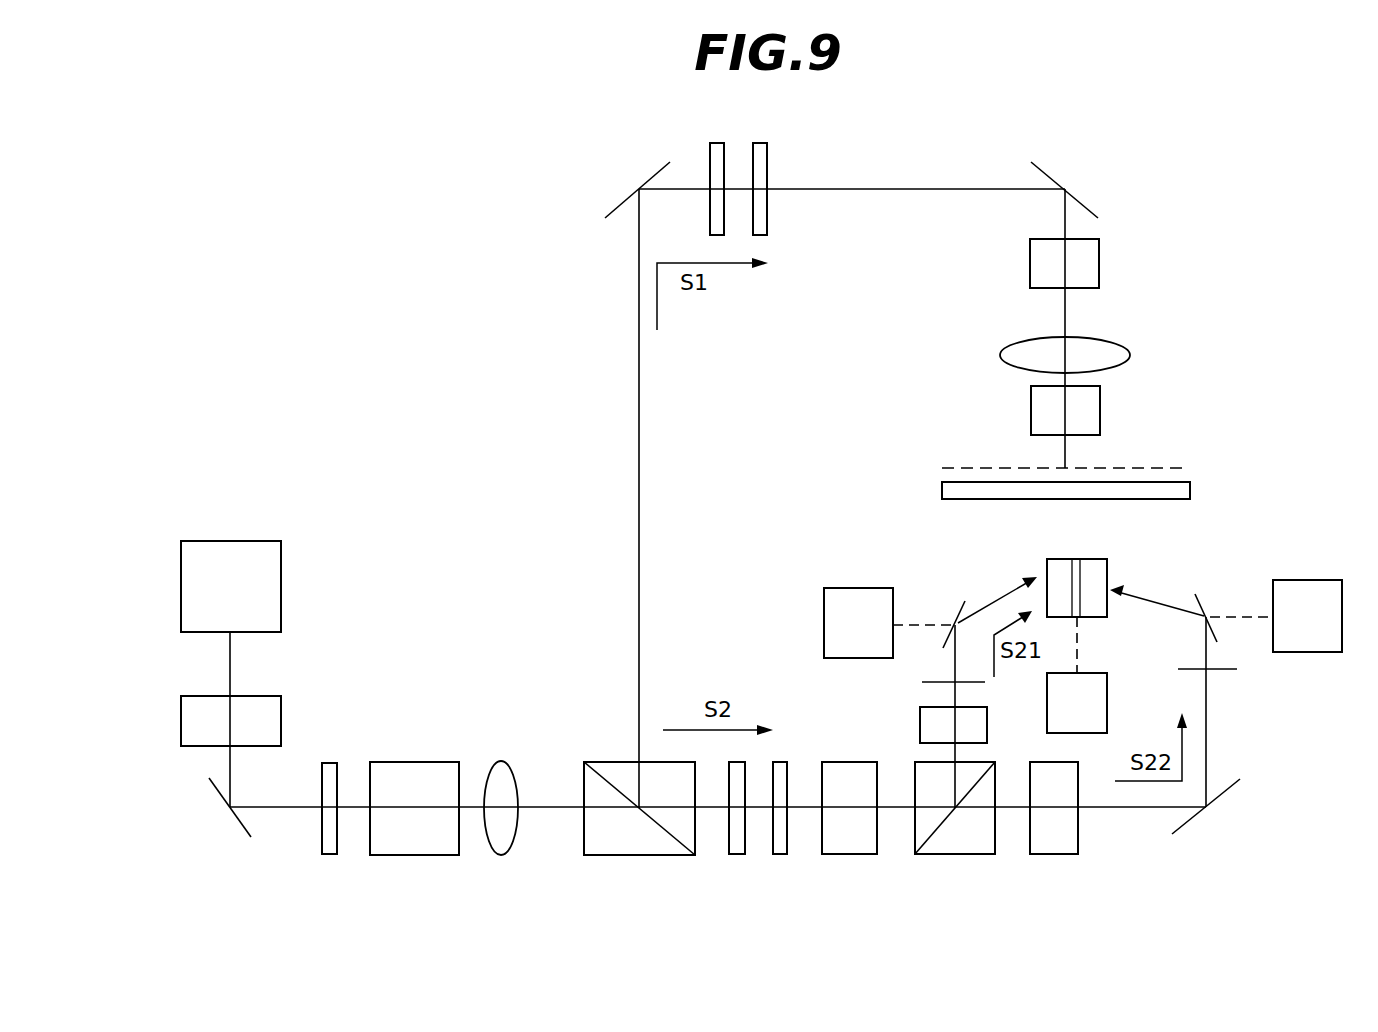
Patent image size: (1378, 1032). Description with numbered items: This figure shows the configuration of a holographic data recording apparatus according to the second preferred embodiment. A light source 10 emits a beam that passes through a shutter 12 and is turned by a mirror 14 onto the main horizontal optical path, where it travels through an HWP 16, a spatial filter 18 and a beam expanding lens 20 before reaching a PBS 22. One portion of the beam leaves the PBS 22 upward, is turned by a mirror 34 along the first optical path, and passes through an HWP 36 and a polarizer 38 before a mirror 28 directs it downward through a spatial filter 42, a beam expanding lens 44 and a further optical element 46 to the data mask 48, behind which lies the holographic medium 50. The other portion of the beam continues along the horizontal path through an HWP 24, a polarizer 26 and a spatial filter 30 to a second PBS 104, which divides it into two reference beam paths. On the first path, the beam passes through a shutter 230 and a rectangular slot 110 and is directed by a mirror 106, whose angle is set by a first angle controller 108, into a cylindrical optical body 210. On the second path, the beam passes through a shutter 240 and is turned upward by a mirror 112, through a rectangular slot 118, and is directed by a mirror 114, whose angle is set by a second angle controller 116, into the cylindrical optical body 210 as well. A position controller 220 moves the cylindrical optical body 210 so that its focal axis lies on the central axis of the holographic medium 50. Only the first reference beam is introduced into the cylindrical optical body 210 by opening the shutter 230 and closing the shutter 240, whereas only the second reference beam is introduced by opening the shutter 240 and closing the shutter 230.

The light source 10 is at (281, 556).
The shutter 12 is at (281, 704).
The mirror 14 is at (238, 816).
The HWP 16 is at (330, 855).
The spatial filter 18 is at (430, 855).
The beam expanding lens 20 is at (502, 855).
The PBS 22 is at (626, 855).
The HWP 24 is at (738, 854).
The polarizer 26 is at (781, 854).
The mirror 28 is at (1047, 172).
The spatial filter 30 is at (846, 854).
The mirror 34 is at (612, 205).
The HWP 36 is at (724, 152).
The polarizer 38 is at (767, 152).
The spatial filter 42 is at (1030, 260).
The beam expanding lens 44 is at (1002, 352).
The lens 46 is at (1031, 408).
The data mask 48 is at (1136, 466).
The holographic medium 50 is at (942, 490).
The PBS 104 is at (940, 854).
The mirror 106 is at (958, 612).
The first angle controller 108 is at (880, 588).
The rectangular slot 110 is at (922, 682).
The mirror 112 is at (1228, 790).
The mirror 114 is at (1201, 605).
The second angle controller 116 is at (1330, 580).
The rectangular slot 118 is at (1230, 669).
The cylindrical optical body 210 is at (1056, 559).
The position controller 220 is at (1107, 683).
The shutter 230 is at (920, 725).
The shutter 240 is at (1053, 854).